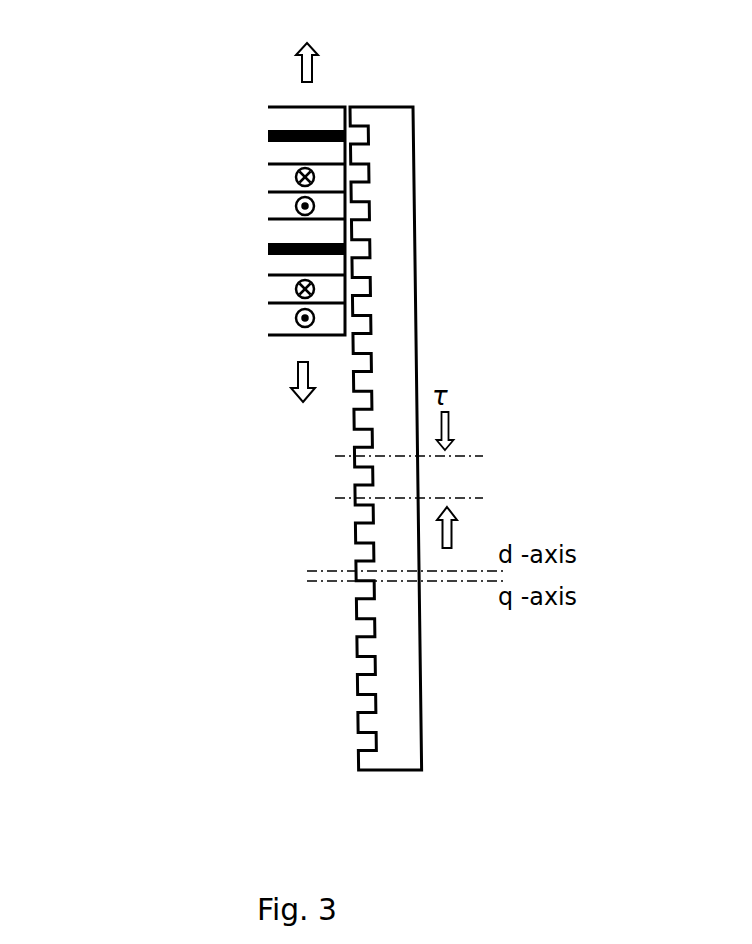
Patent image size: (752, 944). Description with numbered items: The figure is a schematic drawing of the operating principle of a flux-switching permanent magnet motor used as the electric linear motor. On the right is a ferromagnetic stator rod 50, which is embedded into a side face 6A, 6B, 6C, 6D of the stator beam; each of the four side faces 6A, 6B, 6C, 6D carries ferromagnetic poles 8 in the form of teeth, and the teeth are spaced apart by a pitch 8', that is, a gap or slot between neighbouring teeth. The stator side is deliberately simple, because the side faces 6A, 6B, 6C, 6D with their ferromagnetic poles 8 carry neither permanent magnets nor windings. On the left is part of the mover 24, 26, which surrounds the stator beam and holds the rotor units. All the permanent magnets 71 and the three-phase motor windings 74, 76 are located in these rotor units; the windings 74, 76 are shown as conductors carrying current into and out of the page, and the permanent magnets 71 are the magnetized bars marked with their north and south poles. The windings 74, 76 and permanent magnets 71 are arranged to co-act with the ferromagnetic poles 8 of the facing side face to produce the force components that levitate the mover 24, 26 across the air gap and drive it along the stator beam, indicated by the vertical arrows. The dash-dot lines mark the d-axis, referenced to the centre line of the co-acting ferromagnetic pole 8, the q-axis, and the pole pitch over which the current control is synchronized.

The mover 24 is at (240, 202).
The mover 26 is at (240, 202).
The permanent magnet 71 is at (268, 132).
The winding 74 is at (292, 171).
The winding 76 is at (294, 210).
The ferromagnetic pole 8 is at (415, 392).
The pitch 8' is at (415, 432).
The ferromagnetic stator rod 50 is at (293, 392).
The side face 6A is at (272, 392).
The side face 6B is at (272, 392).
The side face 6C is at (272, 392).
The side face 6D is at (272, 392).